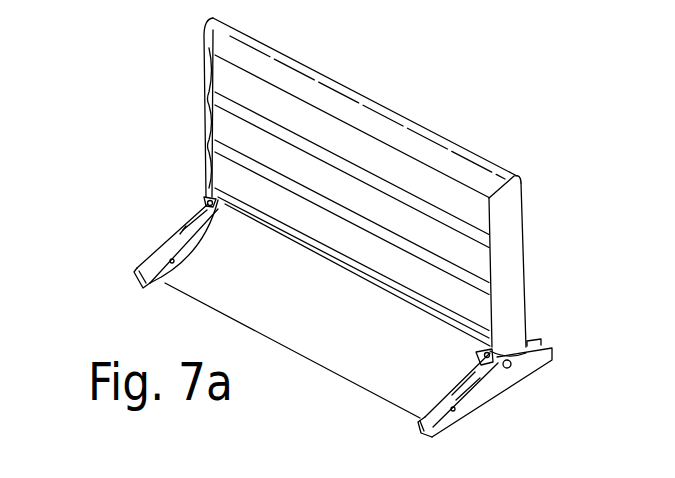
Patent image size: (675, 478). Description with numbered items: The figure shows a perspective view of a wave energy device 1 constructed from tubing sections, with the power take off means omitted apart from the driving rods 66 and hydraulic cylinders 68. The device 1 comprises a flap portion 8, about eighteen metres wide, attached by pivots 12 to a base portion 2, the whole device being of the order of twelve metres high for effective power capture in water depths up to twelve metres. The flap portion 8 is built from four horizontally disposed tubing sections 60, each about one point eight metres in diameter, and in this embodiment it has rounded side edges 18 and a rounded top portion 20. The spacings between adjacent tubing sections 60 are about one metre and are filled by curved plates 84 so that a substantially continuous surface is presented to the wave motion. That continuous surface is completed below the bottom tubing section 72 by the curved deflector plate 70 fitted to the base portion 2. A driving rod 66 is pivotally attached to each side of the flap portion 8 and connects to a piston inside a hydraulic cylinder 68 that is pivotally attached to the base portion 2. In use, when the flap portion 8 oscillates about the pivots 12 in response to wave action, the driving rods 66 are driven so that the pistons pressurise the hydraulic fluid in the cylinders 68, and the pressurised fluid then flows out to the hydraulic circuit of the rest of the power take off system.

The device 1 is at (108, 98).
The base portion 2 is at (526, 366).
The flap portion 8 is at (437, 148).
The pivots 12 is at (509, 369).
The rounded side edges 18 is at (203, 58).
The top portion 20 is at (257, 60).
The tubing sections 60 is at (225, 104).
The driving rod 66 is at (198, 210).
The hydraulic cylinders 68 is at (173, 234).
The deflector plate 70 is at (340, 320).
The bottom tubing section 72 is at (205, 197).
The curved plates 84 is at (328, 132).